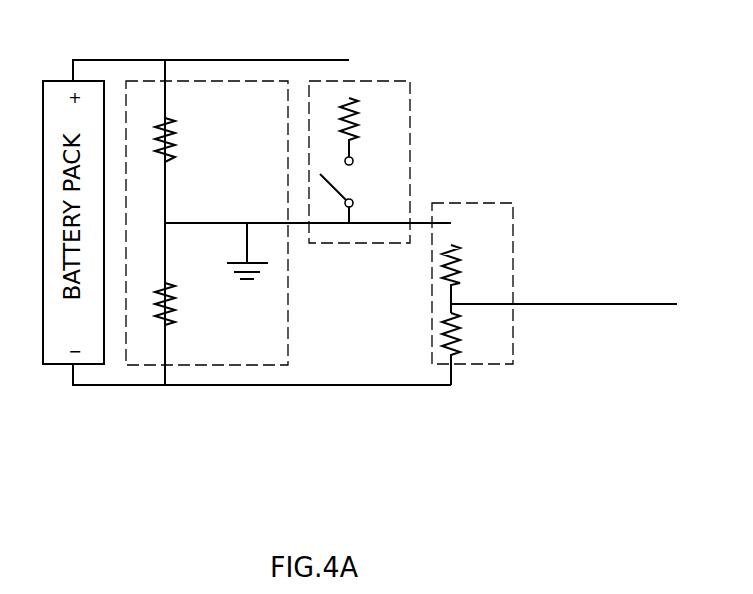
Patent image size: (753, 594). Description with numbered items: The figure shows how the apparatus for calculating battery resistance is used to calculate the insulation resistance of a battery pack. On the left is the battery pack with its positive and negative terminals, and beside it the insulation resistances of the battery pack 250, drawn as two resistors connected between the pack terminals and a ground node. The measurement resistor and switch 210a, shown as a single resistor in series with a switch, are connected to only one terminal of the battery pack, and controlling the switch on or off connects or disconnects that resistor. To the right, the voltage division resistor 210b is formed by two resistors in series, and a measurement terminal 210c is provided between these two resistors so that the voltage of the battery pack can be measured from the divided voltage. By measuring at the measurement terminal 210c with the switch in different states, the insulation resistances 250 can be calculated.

The insulation resistances of the battery pack 250 is at (205, 81).
The measurement resistor and switch 210a is at (388, 81).
The voltage division resistor 210b is at (470, 203).
The measurement terminal 210c is at (602, 307).